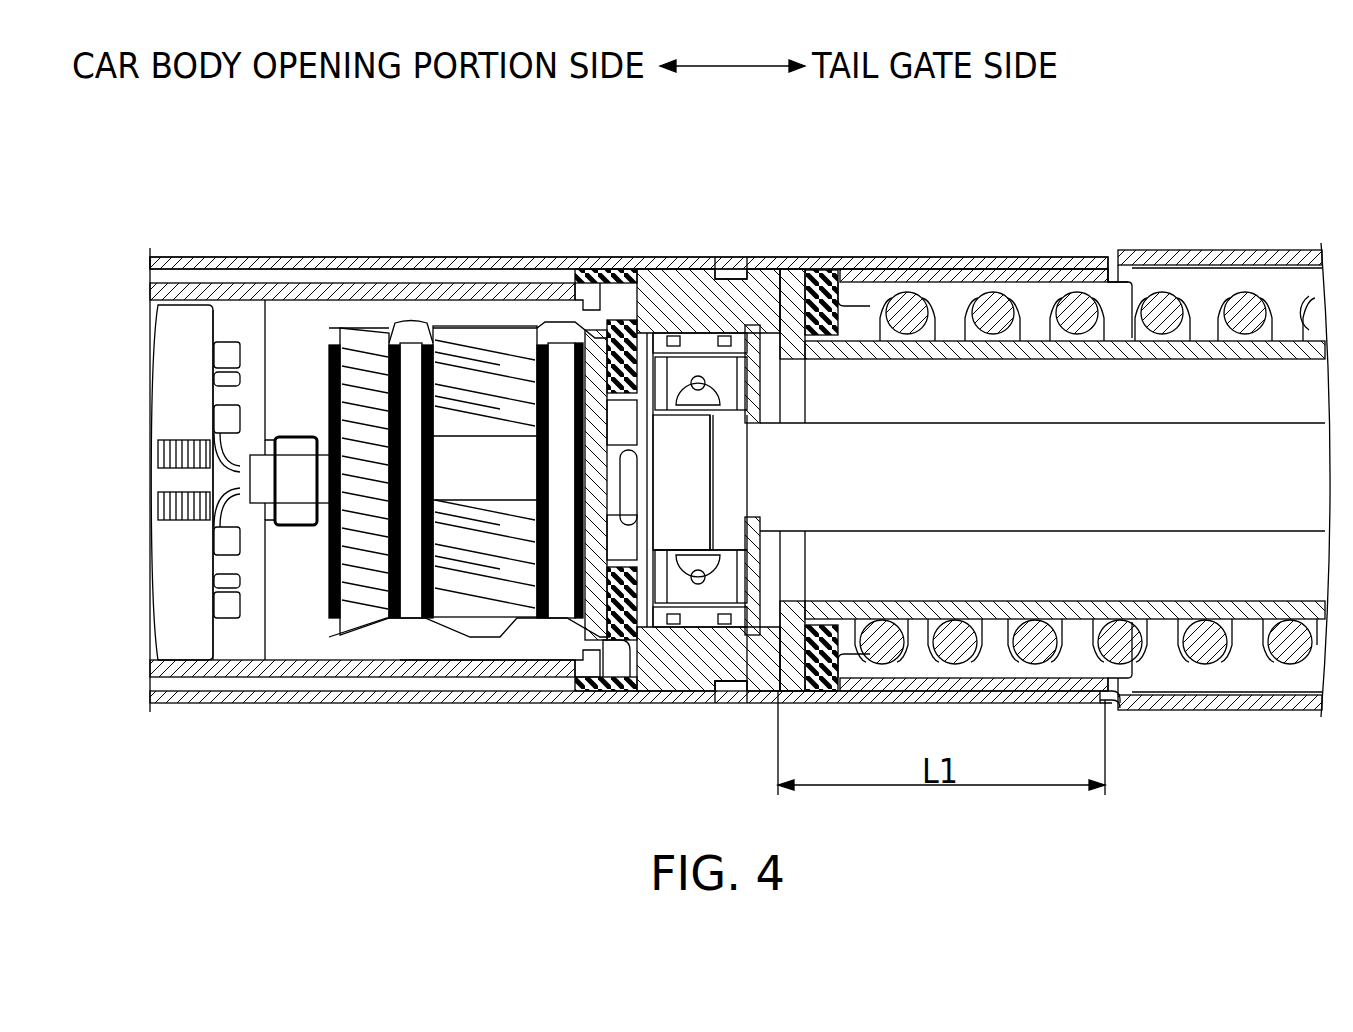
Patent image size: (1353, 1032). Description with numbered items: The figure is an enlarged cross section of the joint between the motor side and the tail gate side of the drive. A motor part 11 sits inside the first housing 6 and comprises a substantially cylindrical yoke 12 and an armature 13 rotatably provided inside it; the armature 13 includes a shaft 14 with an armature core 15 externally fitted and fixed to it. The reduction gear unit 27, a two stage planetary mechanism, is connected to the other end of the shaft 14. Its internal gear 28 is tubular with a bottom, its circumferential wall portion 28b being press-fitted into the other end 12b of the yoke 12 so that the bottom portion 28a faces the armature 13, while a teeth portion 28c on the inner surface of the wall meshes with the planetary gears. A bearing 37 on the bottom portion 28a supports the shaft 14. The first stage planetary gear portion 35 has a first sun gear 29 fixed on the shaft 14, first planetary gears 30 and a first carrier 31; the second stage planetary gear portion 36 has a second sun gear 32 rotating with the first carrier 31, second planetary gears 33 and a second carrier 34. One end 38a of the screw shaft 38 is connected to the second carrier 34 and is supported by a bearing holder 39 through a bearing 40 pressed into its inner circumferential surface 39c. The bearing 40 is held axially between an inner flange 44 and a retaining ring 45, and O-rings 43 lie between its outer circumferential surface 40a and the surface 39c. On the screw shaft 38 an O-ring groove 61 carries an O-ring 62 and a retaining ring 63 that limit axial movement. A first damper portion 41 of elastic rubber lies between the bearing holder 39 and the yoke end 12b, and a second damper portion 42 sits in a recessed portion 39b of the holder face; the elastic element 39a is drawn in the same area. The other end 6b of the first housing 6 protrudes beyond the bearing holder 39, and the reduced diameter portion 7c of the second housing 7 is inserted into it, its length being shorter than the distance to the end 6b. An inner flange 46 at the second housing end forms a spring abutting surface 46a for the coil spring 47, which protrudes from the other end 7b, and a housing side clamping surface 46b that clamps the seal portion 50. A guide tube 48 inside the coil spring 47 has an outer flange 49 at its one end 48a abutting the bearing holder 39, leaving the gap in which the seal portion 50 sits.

The first housing 6 is at (237, 257).
The other end of the first housing 6b is at (1118, 708).
The second housing 7 is at (1225, 250).
The other end of the second housing 7b is at (1118, 275).
The reduced diameter portion 7c is at (1100, 270).
The motor part 11 is at (198, 257).
The yoke 12 is at (280, 282).
The other end of the yoke 12b is at (605, 274).
The armature 13 is at (187, 298).
The shaft 14 is at (262, 497).
The armature core 15 is at (185, 645).
The reduction gear unit 27 is at (520, 345).
The internal gear 28 is at (405, 300).
The bottom portion 28a is at (272, 603).
The circumferential wall portion 28b is at (470, 662).
The teeth portion 28c is at (560, 345).
The first sun gear 29 is at (368, 445).
The first planetary gears 30 is at (355, 345).
The first carrier 31 is at (408, 605).
The second sun gear 32 is at (493, 482).
The second planetary gears 33 is at (445, 328).
The second carrier 34 is at (560, 605).
The first stage planetary gear portion 35 is at (372, 293).
The second stage planetary gear portion 36 is at (480, 322).
The bearing 37 is at (293, 527).
The screw shaft 38 is at (985, 425).
The one end of the screw shaft 38a is at (680, 520).
The bearing holder 39 is at (770, 330).
The elastic member 39a is at (625, 333).
The recessed portion 39b is at (620, 640).
The inner circumferential surface 39c is at (697, 330).
The bearing 40 is at (750, 600).
The outer circumferential surface 40a is at (712, 627).
The first damper portion 41 is at (574, 700).
The second damper portion 42 is at (650, 335).
The O-rings 43 is at (672, 330).
The inner flange 44 is at (655, 363).
The retaining ring 45 is at (755, 333).
The inner flange 46 is at (856, 330).
The spring abutting surface 46a is at (856, 340).
The housing side clamping surface 46b is at (822, 300).
The coil spring 47 is at (1160, 300).
The guide tube 48 is at (1057, 359).
The one end of the guide tube 48a is at (795, 600).
The outer flange 49 is at (830, 677).
The seal portion 50 is at (822, 692).
The O-ring groove 61 is at (757, 527).
The O-ring 62 is at (680, 458).
The retaining ring 63 is at (718, 437).